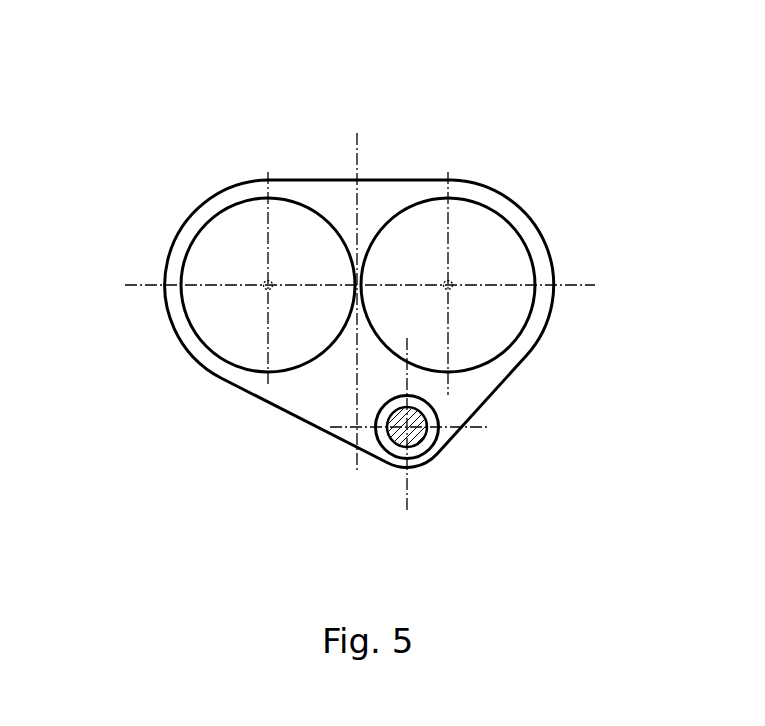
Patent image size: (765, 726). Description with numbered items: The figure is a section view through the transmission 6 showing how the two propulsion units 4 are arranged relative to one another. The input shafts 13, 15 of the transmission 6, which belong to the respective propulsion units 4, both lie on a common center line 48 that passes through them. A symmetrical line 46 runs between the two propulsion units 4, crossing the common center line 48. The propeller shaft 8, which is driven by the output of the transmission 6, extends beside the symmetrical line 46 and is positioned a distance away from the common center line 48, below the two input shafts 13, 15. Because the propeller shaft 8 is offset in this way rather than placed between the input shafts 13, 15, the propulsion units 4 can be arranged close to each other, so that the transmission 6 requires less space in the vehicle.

The cylinder bore 4 is at (171, 246).
The housing 6 is at (242, 179).
The fastening bore 8 is at (423, 442).
The axis of second bore 13 is at (455, 283).
The axis of first bore 15 is at (263, 277).
The center plane 46 is at (358, 161).
The transverse axis 48 is at (563, 287).